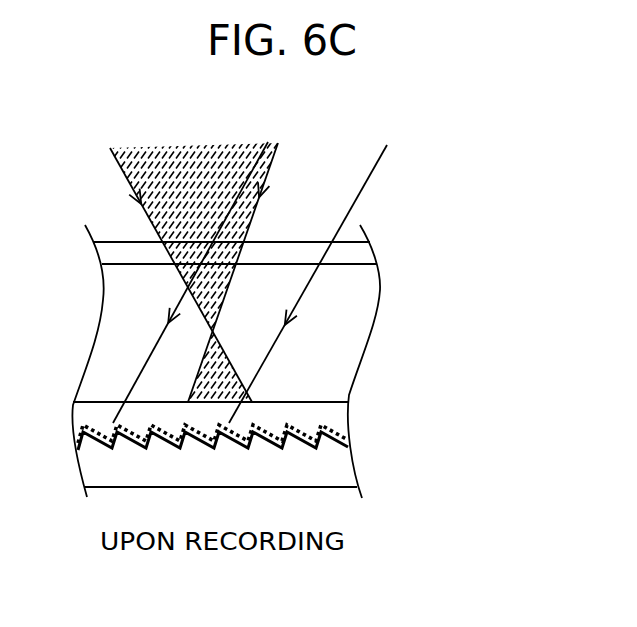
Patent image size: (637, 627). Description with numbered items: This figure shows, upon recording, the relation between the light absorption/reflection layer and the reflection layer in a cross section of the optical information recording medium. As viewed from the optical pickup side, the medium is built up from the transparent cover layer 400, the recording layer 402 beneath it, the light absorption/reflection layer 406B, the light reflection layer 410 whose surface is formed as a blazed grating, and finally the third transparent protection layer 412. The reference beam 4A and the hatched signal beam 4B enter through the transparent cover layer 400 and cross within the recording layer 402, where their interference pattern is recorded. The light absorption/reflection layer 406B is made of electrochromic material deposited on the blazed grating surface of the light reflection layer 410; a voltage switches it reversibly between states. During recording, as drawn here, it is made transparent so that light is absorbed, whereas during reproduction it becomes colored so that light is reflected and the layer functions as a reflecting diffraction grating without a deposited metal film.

The reference beam 4A is at (315, 168).
The signal beam 4B is at (203, 170).
The transparent cover layer 400 is at (357, 255).
The recording layer 402 is at (358, 343).
The light absorption/reflection layer 406B is at (323, 428).
The light reflection layer 410 is at (358, 430).
The third transparent protection layer 412 is at (337, 473).